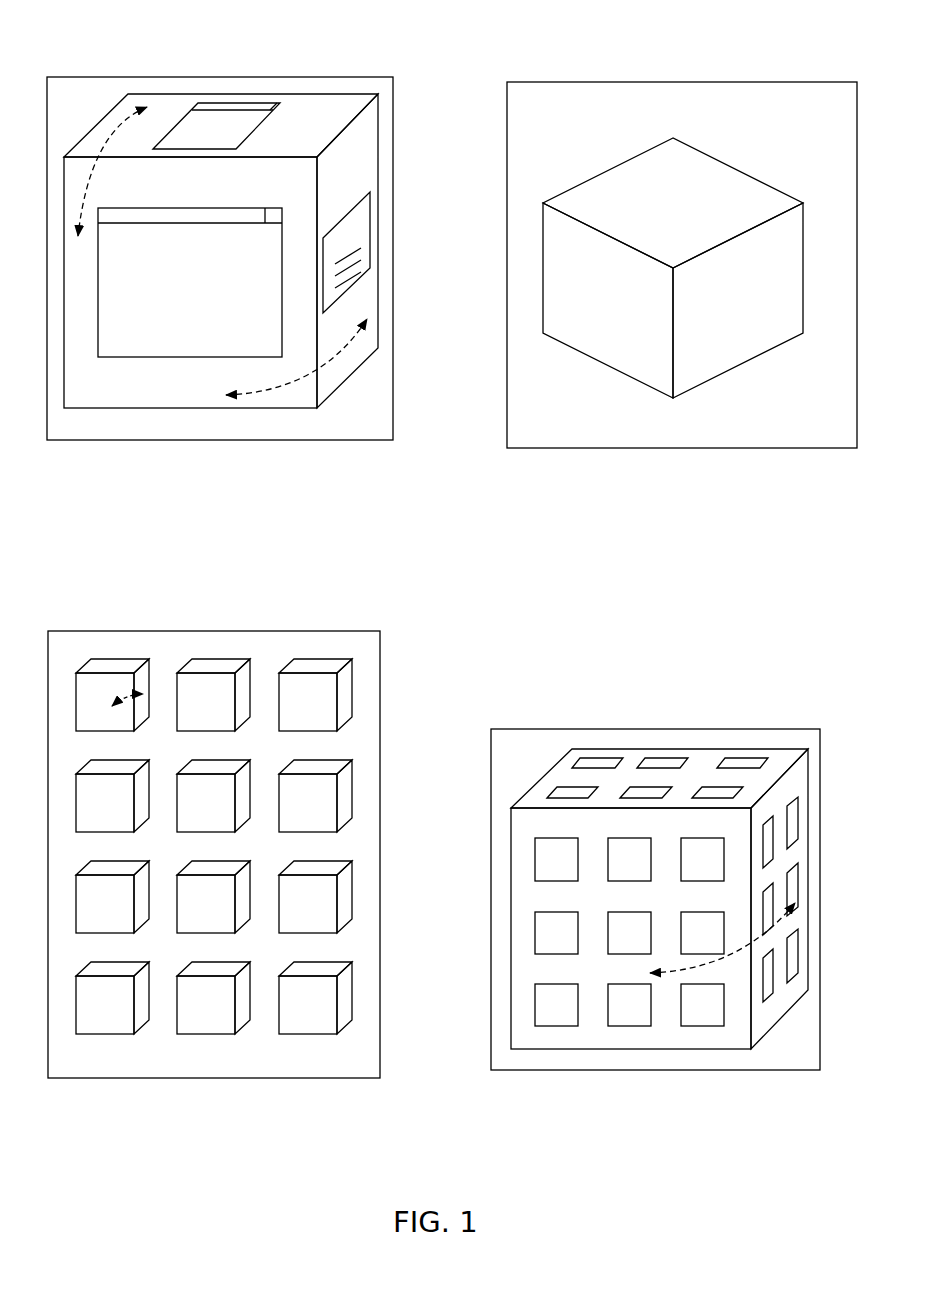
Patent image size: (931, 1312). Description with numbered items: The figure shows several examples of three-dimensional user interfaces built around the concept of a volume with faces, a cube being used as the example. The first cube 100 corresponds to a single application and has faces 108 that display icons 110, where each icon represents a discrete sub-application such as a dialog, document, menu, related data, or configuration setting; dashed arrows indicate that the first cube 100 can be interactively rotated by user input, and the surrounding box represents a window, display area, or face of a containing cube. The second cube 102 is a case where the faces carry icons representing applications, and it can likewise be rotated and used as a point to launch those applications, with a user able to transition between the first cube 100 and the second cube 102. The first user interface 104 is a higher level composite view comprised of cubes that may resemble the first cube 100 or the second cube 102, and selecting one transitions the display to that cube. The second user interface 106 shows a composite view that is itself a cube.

The first cube 100 is at (253, 56).
The second cube 102 is at (700, 78).
The first user interface 104 is at (226, 626).
The second user interface 106 is at (667, 723).
The faces 108 is at (358, 150).
The icons 110 is at (145, 253).